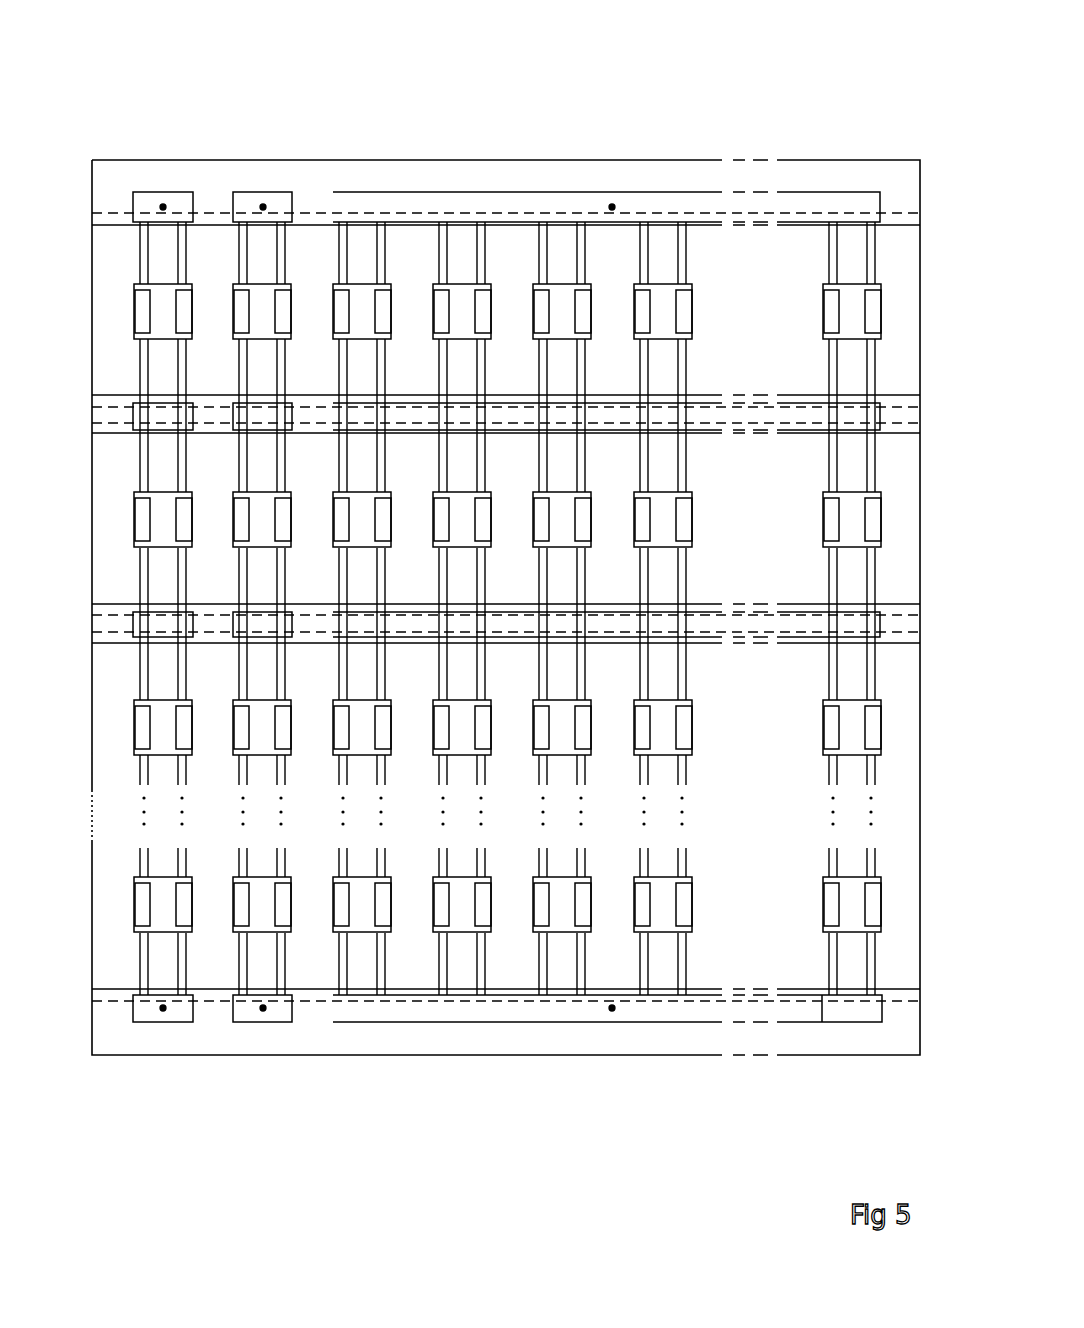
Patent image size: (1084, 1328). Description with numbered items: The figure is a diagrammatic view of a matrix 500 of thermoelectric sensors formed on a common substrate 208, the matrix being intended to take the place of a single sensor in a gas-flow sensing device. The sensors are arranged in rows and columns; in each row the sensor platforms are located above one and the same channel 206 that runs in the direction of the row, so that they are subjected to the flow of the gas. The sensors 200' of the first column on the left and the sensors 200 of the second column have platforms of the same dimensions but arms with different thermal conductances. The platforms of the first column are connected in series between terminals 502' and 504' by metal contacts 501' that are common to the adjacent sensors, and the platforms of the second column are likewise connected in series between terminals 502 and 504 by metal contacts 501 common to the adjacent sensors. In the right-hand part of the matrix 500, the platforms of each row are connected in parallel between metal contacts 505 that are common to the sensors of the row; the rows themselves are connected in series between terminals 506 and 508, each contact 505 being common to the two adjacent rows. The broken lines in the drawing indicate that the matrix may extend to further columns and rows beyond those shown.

The matrix 500 is at (812, 95).
The terminal 502' is at (157, 146).
The terminal 502 is at (267, 146).
The terminal 506 is at (612, 207).
The substrate 208 is at (92, 255).
The channel 206 is at (108, 308).
The sensor 200' is at (184, 495).
The sensor 200 is at (381, 495).
The metal contact 501' is at (119, 516).
The metal contact 501 is at (169, 544).
The metal contact 505 is at (798, 415).
The terminal 504' is at (168, 1073).
The terminal 504 is at (265, 1073).
The terminal 508 is at (612, 1008).